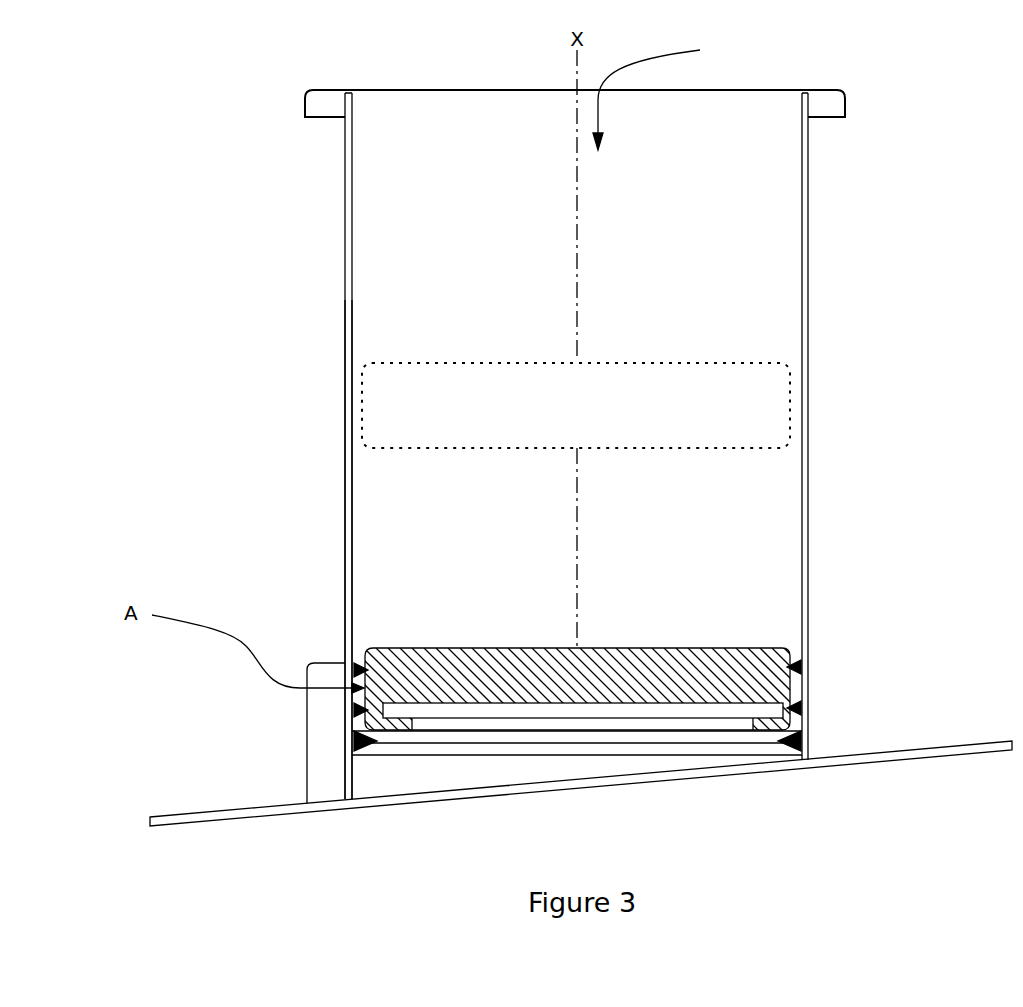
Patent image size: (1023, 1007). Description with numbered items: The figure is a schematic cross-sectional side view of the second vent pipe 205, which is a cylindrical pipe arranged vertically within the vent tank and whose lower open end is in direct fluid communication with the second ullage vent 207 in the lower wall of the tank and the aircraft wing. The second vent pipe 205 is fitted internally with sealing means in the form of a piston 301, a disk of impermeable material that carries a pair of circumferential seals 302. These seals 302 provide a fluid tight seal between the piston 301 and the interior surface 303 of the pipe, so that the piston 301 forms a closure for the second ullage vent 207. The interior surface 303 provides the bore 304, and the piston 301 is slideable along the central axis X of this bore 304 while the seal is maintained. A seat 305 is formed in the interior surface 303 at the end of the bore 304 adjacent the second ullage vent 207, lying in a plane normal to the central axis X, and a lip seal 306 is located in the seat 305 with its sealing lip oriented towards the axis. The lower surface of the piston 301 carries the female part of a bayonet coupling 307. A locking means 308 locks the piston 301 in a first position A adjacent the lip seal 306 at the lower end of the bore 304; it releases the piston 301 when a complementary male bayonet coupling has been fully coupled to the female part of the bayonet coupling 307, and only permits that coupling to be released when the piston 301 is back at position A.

The second vent pipe 205 is at (808, 216).
The second ullage vent 207 is at (450, 800).
The piston 301 is at (712, 648).
The circumferential seals 302 is at (807, 707).
The interior surface 303 is at (352, 548).
The bore 304 is at (669, 93).
The seat 305 is at (355, 740).
The lip seal 306 is at (807, 738).
The female part of a bayonet coupling 307 is at (412, 726).
The locking means 308 is at (325, 768).